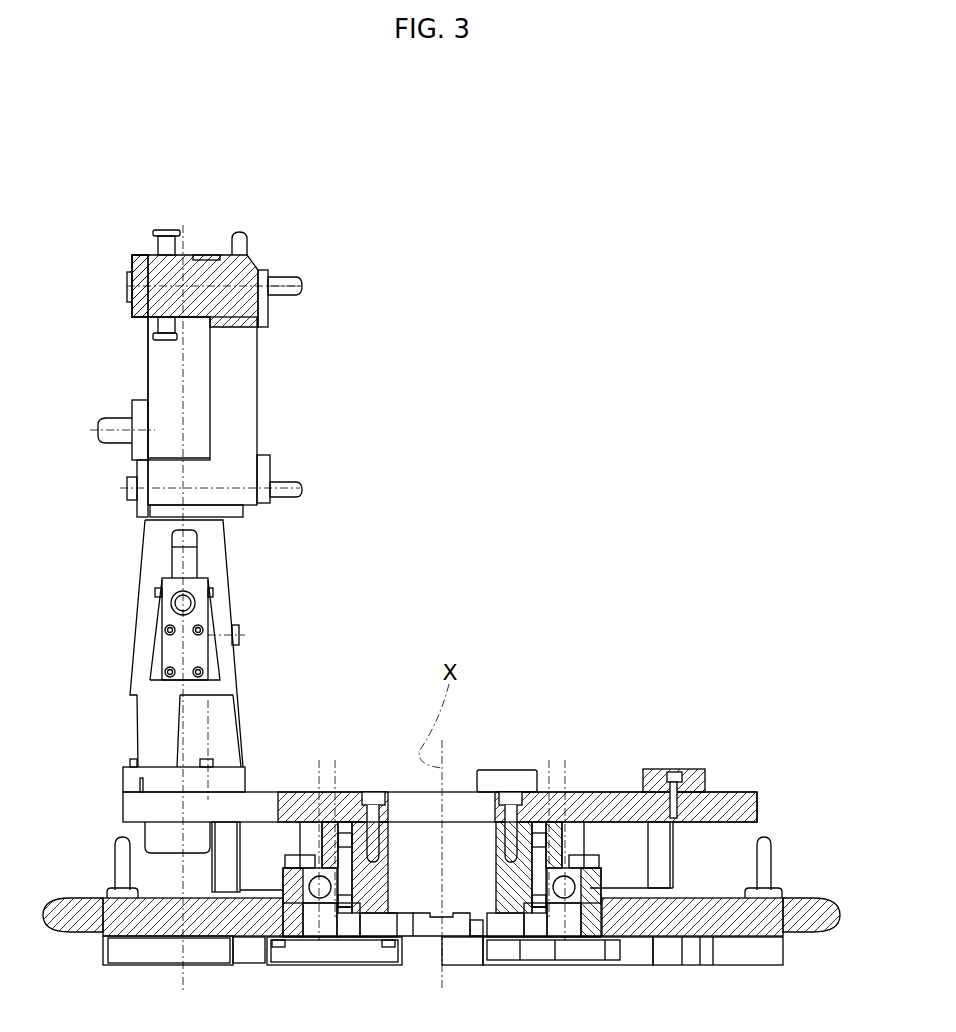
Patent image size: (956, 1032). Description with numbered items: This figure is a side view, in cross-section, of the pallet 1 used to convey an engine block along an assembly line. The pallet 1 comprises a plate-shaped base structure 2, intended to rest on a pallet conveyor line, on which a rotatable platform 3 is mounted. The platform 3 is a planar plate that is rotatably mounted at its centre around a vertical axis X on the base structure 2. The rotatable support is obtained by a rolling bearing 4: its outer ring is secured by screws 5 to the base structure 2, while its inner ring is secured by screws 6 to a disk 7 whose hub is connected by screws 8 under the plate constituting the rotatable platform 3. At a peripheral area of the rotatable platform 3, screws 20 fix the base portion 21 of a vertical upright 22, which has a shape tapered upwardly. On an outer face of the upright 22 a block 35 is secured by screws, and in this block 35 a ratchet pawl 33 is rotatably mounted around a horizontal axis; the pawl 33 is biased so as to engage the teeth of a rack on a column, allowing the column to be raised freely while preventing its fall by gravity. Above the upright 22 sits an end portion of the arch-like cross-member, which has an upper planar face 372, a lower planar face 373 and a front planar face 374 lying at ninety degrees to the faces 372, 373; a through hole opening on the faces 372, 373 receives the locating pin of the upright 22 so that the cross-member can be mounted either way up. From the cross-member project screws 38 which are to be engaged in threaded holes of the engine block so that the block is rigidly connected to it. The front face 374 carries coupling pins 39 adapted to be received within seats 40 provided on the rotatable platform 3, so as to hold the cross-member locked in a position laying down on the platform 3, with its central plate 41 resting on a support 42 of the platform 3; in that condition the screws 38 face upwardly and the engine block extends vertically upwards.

The pallet 1 is at (606, 362).
The base structure 2 is at (816, 897).
The rotatable platform 3 is at (762, 800).
The rolling bearing 4 is at (326, 908).
The screws 5 is at (290, 882).
The screws 6 is at (348, 918).
The disk 7 is at (318, 835).
The screws 8 is at (378, 835).
The screws 20 is at (208, 760).
The base portions 21 is at (130, 778).
The vertical uprights 22 is at (130, 627).
The ratchet pawl 33 is at (178, 556).
The block 35 is at (195, 652).
The screws 38 is at (290, 280).
The coupling pins 39 is at (120, 419).
The seats 40 is at (520, 775).
The central plate 41 is at (136, 310).
The support 42 is at (686, 770).
The upper planar face 372 is at (214, 255).
The lower planar face 373 is at (241, 507).
The front planar face 374 is at (240, 395).